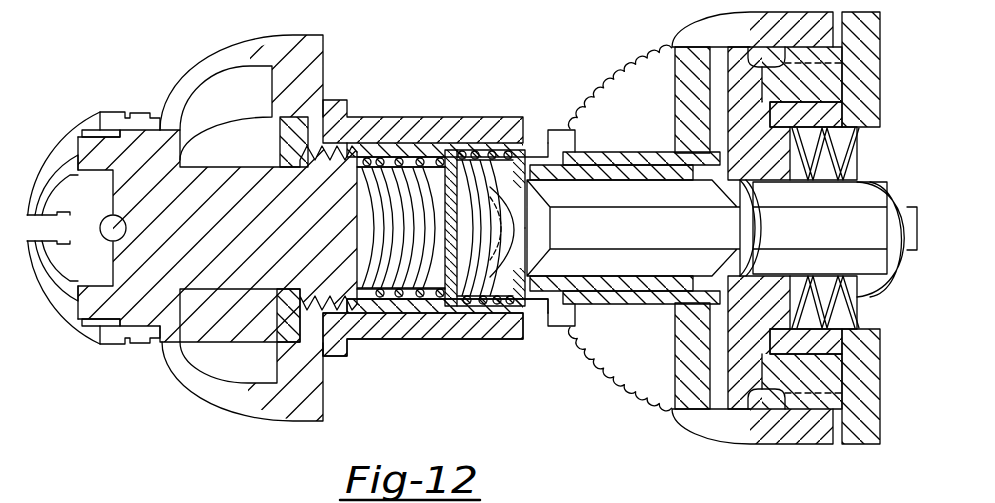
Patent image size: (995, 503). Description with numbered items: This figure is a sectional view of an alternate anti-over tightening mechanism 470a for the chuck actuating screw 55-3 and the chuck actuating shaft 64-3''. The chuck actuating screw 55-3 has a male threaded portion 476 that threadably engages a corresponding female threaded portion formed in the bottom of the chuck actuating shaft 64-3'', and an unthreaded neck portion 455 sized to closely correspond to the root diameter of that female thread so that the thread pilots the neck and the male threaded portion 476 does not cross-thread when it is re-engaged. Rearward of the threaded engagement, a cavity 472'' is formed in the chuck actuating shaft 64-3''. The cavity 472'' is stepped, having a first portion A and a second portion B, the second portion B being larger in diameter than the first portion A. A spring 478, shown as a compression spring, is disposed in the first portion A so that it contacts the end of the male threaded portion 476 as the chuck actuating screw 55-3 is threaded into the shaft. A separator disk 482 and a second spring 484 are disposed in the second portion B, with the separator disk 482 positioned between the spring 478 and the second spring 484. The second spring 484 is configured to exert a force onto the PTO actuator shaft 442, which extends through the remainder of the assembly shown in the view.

The chuck actuating screw 55-3 is at (123, 158).
The unthreaded neck portion 455 is at (222, 167).
The male threaded portion 476 is at (276, 301).
The anti-over tightening mechanism 470a is at (397, 154).
The first portion A is at (423, 160).
The separator disk 482 is at (443, 162).
The second spring 484 is at (483, 160).
The second portion B is at (497, 180).
The PTO actuator shaft 442 is at (835, 228).
The cavity 472'' is at (398, 271).
The spring 478 is at (412, 297).
The chuck actuating shaft 64-3'' is at (435, 343).